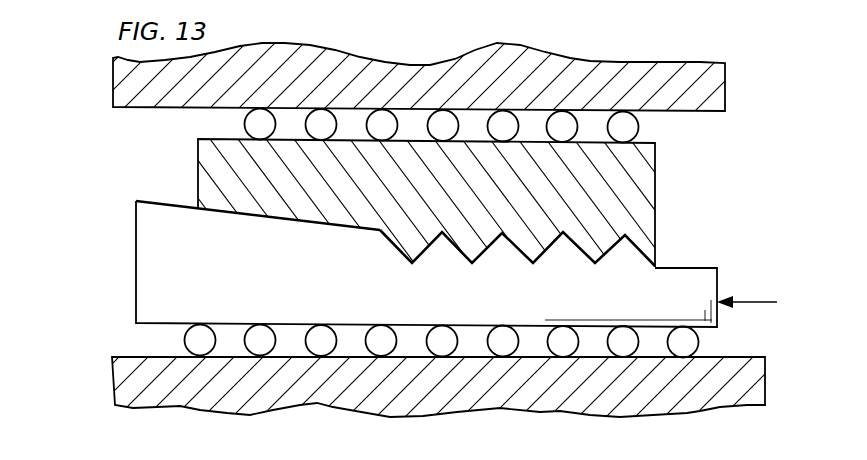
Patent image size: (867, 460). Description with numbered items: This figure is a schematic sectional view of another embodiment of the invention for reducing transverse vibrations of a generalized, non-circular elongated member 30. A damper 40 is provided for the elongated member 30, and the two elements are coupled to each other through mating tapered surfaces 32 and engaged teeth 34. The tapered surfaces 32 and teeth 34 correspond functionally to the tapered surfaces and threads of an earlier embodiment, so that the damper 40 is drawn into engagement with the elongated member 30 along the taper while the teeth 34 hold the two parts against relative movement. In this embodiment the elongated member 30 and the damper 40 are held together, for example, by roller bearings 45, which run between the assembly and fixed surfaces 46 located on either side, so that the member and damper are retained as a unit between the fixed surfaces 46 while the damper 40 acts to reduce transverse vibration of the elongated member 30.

The elongated member 30 is at (157, 220).
The mating tapered surfaces 32 is at (207, 203).
The engaged teeth 34 is at (583, 247).
The damper 40 is at (635, 177).
The roller bearings 45 is at (625, 118).
The fixed surfaces 46 is at (417, 113).